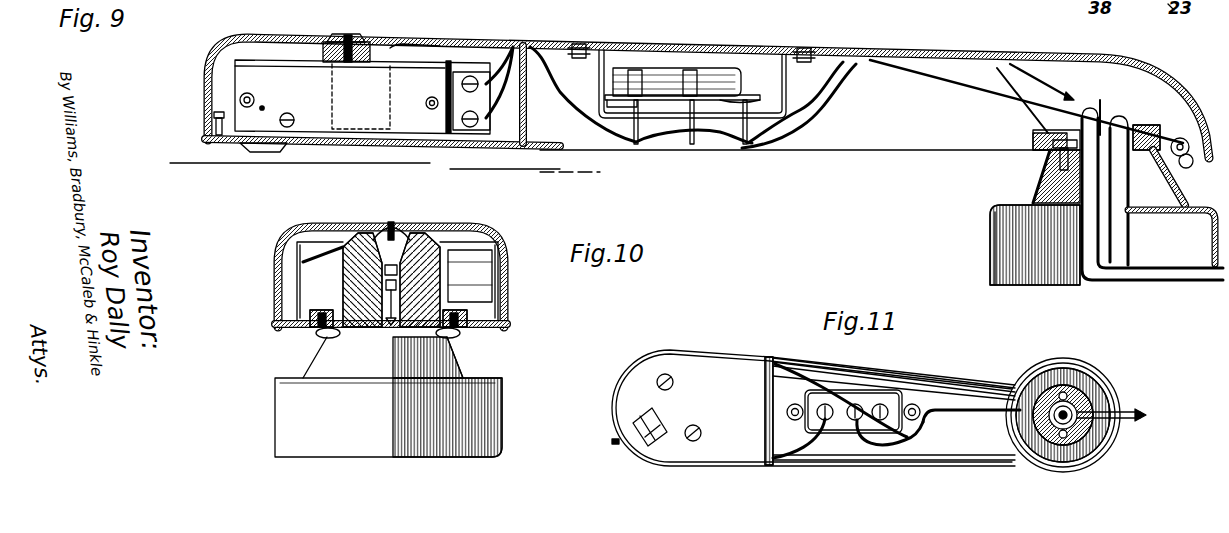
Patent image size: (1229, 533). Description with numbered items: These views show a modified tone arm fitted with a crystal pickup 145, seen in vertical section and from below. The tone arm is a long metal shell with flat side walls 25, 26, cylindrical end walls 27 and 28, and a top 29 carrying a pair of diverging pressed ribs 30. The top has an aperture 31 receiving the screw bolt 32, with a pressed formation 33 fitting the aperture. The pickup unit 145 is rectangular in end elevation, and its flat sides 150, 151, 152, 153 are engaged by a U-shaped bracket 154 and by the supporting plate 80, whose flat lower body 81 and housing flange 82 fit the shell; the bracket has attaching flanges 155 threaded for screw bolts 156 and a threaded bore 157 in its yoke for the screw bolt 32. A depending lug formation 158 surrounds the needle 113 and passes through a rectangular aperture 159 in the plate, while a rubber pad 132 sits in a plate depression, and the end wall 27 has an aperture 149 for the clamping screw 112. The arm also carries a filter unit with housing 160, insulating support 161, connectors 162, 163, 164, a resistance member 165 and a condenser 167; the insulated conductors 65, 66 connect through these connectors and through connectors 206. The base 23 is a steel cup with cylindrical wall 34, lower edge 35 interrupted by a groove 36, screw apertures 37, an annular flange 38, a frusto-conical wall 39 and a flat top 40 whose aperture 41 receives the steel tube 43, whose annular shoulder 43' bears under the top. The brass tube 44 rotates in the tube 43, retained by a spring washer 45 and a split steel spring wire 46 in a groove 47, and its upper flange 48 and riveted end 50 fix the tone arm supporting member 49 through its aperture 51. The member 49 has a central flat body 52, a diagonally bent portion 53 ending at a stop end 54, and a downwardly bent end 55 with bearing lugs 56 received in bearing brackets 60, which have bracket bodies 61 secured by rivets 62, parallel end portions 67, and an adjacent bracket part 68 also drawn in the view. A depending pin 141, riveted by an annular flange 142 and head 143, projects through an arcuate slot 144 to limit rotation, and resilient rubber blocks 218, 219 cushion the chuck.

In FIG. 9, the base 23 is at (992, 253).
In FIG. 10, the base 23 is at (274, 398).
In FIG. 11, the base 23 is at (1088, 363).
In FIG. 9, the side wall 25 is at (860, 122).
In FIG. 10, the side wall 25 is at (278, 249).
In FIG. 11, the side wall 25 is at (753, 466).
In FIG. 10, the side wall 26 is at (507, 278).
In FIG. 11, the side wall 26 is at (760, 353).
In FIG. 9, the end wall 27 is at (850, 154).
In FIG. 10, the end wall 27 is at (275, 277).
In FIG. 11, the end wall 27 is at (832, 466).
In FIG. 9, the end wall 28 is at (1194, 60).
In FIG. 9, the top 29 is at (852, 63).
In FIG. 10, the top 29 is at (450, 226).
In FIG. 11, the top 29 is at (923, 382).
In FIG. 9, the pressed ribs 30 is at (902, 46).
In FIG. 9, the aperture 31 is at (388, 52).
In FIG. 9, the screw bolt 32 is at (348, 35).
In FIG. 10, the screw bolt 32 is at (394, 227).
In FIG. 9, the pressed formation 33 is at (322, 50).
In FIG. 9, the cylindrical wall 34 is at (993, 230).
In FIG. 10, the cylindrical wall 34 is at (313, 413).
In FIG. 11, the cylindrical wall 34 is at (1085, 398).
In FIG. 9, the lower edge 35 is at (995, 287).
In FIG. 10, the lower edge 35 is at (320, 457).
In FIG. 9, the groove 36 is at (1222, 283).
In FIG. 11, the groove 36 is at (1123, 422).
In FIG. 11, the apertures 37 is at (1063, 392).
In FIG. 9, the annular flange 38 is at (1200, 212).
In FIG. 10, the annular flange 38 is at (487, 380).
In FIG. 11, the annular flange 38 is at (1107, 434).
In FIG. 9, the frusto-conical wall 39 is at (1133, 217).
In FIG. 10, the frusto-conical wall 39 is at (460, 360).
In FIG. 11, the frusto-conical wall 39 is at (1087, 444).
In FIG. 9, the flat top 40 is at (1148, 145).
In FIG. 11, the flat top 40 is at (1093, 415).
In FIG. 9, the aperture 41 is at (1110, 163).
In FIG. 9, the steel tube 43 is at (1041, 270).
In FIG. 11, the steel tube 43 is at (1091, 463).
In FIG. 9, the annular shoulder 43' is at (1190, 177).
In FIG. 9, the brass tube 44 is at (1123, 230).
In FIG. 11, the brass tube 44 is at (1060, 430).
In FIG. 9, the spring washer 45 is at (1120, 270).
In FIG. 9, the split steel spring wire 46 is at (1087, 267).
In FIG. 9, the groove 47 is at (1097, 283).
In FIG. 9, the radially projecting flange 48 is at (1043, 178).
In FIG. 9, the tone arm supporting member 49 is at (1081, 134).
In FIG. 9, the riveted end 50 is at (1110, 123).
In FIG. 9, the aperture 51 is at (1102, 125).
In FIG. 9, the central flat body 52 is at (1133, 128).
In FIG. 9, the diagonally bent portion 53 is at (1047, 142).
In FIG. 9, the end 54 is at (1000, 70).
In FIG. 9, the downwardly bent end 55 is at (1167, 147).
In FIG. 9, the bearing lugs 56 is at (1192, 138).
In FIG. 9, the bearing brackets 60 is at (1043, 120).
In FIG. 9, the contact 61 is at (1052, 132).
In FIG. 9, the rivets 62 is at (1040, 9).
In FIG. 9, the insulated conductor 65 is at (544, 46).
In FIG. 11, the insulated conductor 65 is at (990, 423).
In FIG. 9, the insulated conductor 66 is at (509, 52).
In FIG. 11, the insulated conductor 66 is at (973, 407).
In FIG. 9, the parallel end portions 67 is at (1181, 140).
In FIG. 9, the clamp loop 68 is at (1196, 163).
In FIG. 9, the supporting plate 80 is at (503, 146).
In FIG. 10, the supporting plate 80 is at (292, 328).
In FIG. 11, the supporting plate 80 is at (688, 362).
In FIG. 10, the flat lower body 81 is at (502, 315).
In FIG. 10, the housing flange 82 is at (458, 242).
In FIG. 9, the clamping screw 112 is at (218, 112).
In FIG. 9, the needle 113 is at (238, 147).
In FIG. 11, the needle 113 is at (636, 430).
In FIG. 10, the rubber pad 132 is at (465, 276).
In FIG. 9, the depending pin 141 is at (1057, 167).
In FIG. 11, the depending pin 141 is at (1040, 418).
In FIG. 9, the annular flange 142 is at (1053, 147).
In FIG. 9, the head 143 is at (1032, 130).
In FIG. 9, the arcuate slot 144 is at (1073, 157).
In FIG. 11, the arcuate slot 144 is at (1040, 388).
In FIG. 9, the crystal pickup 145 is at (247, 72).
In FIG. 10, the crystal pickup 145 is at (474, 298).
In FIG. 9, the aperture 149 is at (218, 126).
In FIG. 10, the flat side 150 is at (318, 279).
In FIG. 9, the flat side 151 is at (437, 141).
In FIG. 10, the flat side 151 is at (378, 328).
In FIG. 9, the flat side 152 is at (323, 118).
In FIG. 9, the flat side 153 is at (257, 62).
In FIG. 10, the flat side 153 is at (367, 235).
In FIG. 9, the U-shaped bracket 154 is at (495, 60).
In FIG. 10, the U-shaped bracket 154 is at (338, 248).
In FIG. 9, the attaching flanges 155 is at (400, 133).
In FIG. 10, the attaching flanges 155 is at (317, 312).
In FIG. 10, the screw bolts 156 is at (320, 334).
In FIG. 11, the screw bolts 156 is at (672, 387).
In FIG. 10, the threaded bore 157 is at (407, 240).
In FIG. 9, the depending lug formation 158 is at (265, 147).
In FIG. 11, the depending lug formation 158 is at (690, 438).
In FIG. 11, the rectangular aperture 159 is at (638, 412).
In FIG. 9, the housing 160 is at (773, 60).
In FIG. 11, the housing 160 is at (853, 433).
In FIG. 9, the insulating support 161 is at (710, 100).
In FIG. 9, the connector 162 is at (647, 150).
In FIG. 11, the connector 162 is at (823, 405).
In FIG. 9, the connector 163 is at (697, 148).
In FIG. 11, the connector 163 is at (857, 405).
In FIG. 9, the connector 164 is at (748, 150).
In FIG. 11, the connector 164 is at (890, 447).
In FIG. 9, the resistance member 165 is at (657, 78).
In FIG. 9, the condenser 167 is at (618, 68).
In FIG. 9, the connector 206 is at (486, 118).
In FIG. 9, the resilient rubber block 218 is at (263, 107).
In FIG. 9, the resilient rubber block 219 is at (243, 147).